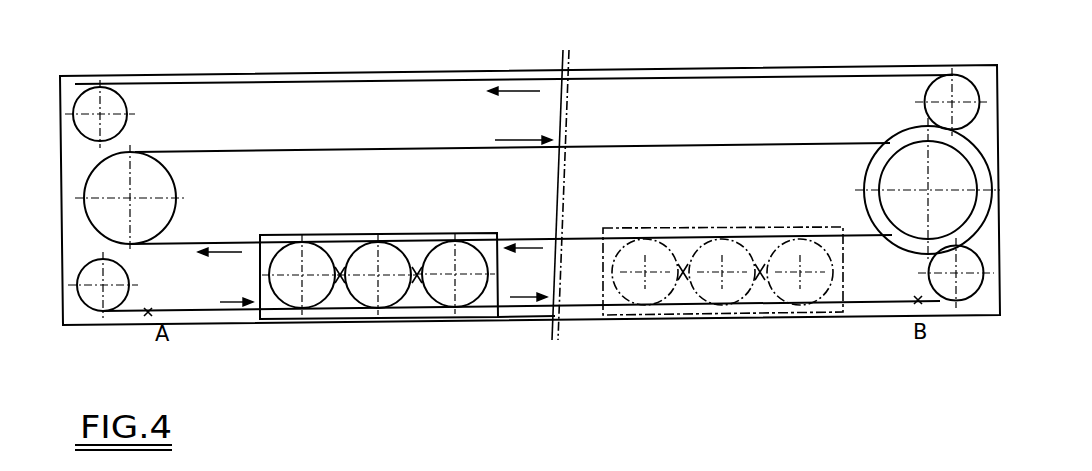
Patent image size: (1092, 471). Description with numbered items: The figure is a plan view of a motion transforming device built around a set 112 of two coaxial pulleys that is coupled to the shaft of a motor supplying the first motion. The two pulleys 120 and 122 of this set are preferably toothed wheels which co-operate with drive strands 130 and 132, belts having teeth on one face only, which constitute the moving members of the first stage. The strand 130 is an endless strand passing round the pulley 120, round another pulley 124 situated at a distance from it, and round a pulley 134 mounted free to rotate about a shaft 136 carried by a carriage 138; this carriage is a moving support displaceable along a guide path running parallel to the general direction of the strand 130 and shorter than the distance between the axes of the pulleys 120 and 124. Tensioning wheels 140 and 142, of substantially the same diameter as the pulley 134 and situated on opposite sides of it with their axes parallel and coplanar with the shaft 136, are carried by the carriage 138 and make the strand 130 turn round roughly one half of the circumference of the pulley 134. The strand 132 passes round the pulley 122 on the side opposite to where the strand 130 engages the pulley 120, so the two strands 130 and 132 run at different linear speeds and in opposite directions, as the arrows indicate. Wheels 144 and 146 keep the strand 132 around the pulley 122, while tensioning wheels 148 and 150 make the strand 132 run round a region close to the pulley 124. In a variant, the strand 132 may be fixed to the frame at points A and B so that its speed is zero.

The set of two coaxial pulleys 112 is at (967, 184).
The pulley 120 is at (980, 180).
The pulley 122 is at (1080, 231).
The pulley 124 is at (178, 233).
The drive strand 130 is at (212, 143).
The drive strand 132 is at (302, 80).
The pulley 134 is at (375, 293).
The shaft 136 is at (413, 299).
The carriage 138 is at (420, 248).
The tensioning wheel 140 is at (290, 293).
The tensioning wheel 142 is at (470, 287).
The wheel 144 is at (963, 90).
The wheel 146 is at (975, 280).
The tensioning wheel 148 is at (112, 104).
The tensioning wheel 150 is at (115, 298).